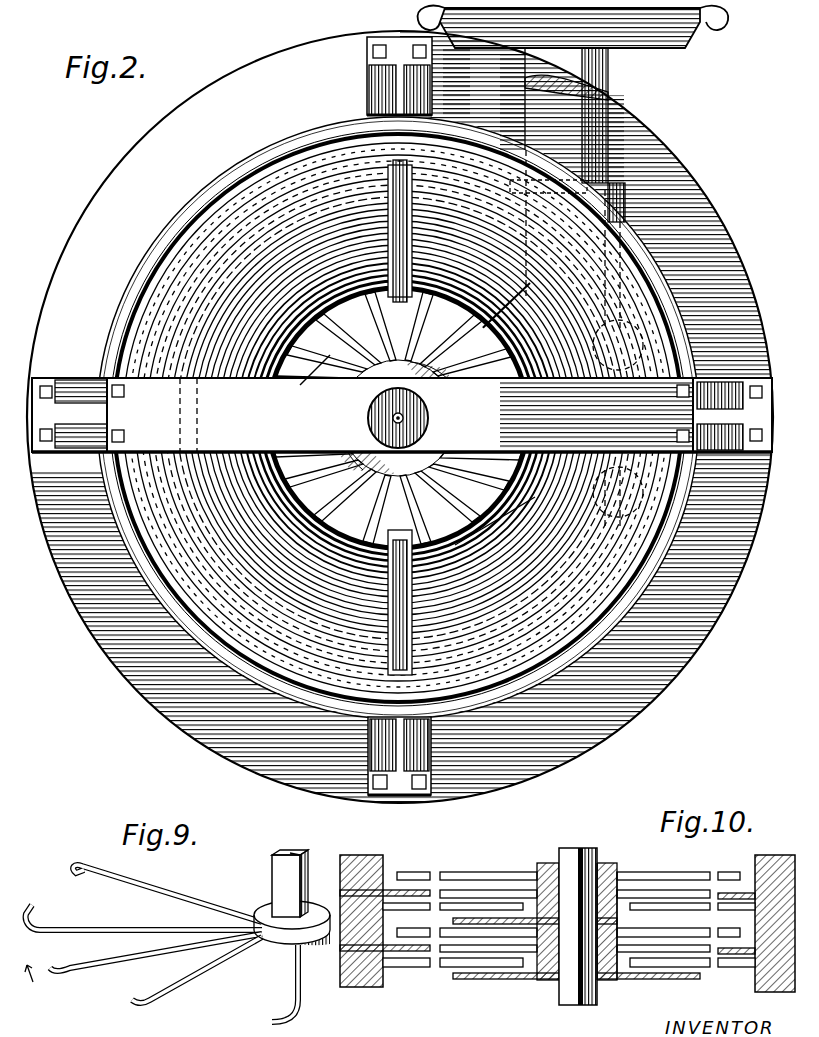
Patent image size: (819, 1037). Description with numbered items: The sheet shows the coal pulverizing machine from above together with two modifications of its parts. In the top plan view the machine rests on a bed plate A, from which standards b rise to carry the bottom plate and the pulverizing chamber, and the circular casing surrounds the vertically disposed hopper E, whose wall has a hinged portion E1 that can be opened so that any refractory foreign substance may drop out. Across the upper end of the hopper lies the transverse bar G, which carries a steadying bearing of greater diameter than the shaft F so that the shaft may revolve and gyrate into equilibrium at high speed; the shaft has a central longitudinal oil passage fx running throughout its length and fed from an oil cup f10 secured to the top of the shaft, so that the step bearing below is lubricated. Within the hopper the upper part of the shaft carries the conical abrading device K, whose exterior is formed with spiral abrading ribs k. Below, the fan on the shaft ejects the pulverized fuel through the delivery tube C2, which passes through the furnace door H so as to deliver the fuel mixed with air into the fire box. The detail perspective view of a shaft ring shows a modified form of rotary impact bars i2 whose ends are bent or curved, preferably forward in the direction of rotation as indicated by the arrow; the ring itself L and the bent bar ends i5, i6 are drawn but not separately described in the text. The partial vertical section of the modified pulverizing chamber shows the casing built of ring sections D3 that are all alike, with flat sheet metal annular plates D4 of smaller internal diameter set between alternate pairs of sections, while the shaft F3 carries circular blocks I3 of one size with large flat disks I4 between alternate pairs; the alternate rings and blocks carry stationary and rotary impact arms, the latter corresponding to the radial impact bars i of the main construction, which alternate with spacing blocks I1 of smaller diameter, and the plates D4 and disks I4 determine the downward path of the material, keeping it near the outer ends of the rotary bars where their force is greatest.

In FIG. 2, the bed plate A is at (400, 419).
In FIG. 2, the standards b is at (368, 92).
In FIG. 2, the furnace door H is at (680, 48).
In FIG. 2, the delivery tube C2 is at (583, 125).
In FIG. 2, the hinged portion E1 is at (530, 283).
In FIG. 2, the hopper E is at (600, 535).
In FIG. 2, the transverse bar G is at (400, 415).
In FIG. 2, the spiral abrading ribs k is at (300, 385).
In FIG. 2, the conical abrading device K is at (398, 418).
In FIG. 2, the oil cup f10 is at (395, 418).
In FIG. 9, the rotary impact bars i2 is at (168, 900).
In FIG. 9, the wire arm hook i5 is at (72, 862).
In FIG. 9, the wire arm hooks i6 is at (38, 910).
In FIG. 9, the collar ring L is at (262, 912).
In FIG. 9, the shaft F is at (272, 855).
In FIG. 9, the oil passage fx is at (300, 835).
In FIG. 10, the ring sections D3 is at (370, 965).
In FIG. 10, the annular plates D4 is at (408, 945).
In FIG. 10, the flat disks I4 is at (493, 918).
In FIG. 10, the circular blocks I3 is at (548, 865).
In FIG. 10, the shaft F3 is at (590, 862).
In FIG. 10, the spacing blocks I1 is at (610, 893).
In FIG. 10, the rotary impact bars i is at (617, 900).